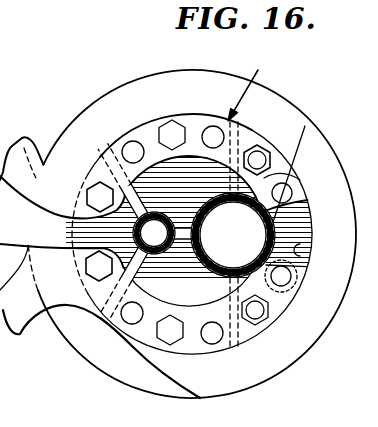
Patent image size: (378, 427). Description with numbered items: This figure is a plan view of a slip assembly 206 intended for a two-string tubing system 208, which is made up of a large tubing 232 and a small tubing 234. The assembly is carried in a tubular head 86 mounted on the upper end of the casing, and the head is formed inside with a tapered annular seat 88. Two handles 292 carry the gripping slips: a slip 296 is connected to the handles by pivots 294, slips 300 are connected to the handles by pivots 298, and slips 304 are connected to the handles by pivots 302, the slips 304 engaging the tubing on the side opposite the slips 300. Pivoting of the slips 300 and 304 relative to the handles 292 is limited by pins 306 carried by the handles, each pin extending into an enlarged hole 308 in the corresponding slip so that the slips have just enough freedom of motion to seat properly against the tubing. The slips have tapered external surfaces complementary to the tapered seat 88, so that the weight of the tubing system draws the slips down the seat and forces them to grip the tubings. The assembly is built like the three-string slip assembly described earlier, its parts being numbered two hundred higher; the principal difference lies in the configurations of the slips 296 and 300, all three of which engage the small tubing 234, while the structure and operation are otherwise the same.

The tubular head 86 is at (296, 365).
The tapered annular seat 88 is at (300, 251).
The slip assembly 206 is at (253, 86).
The two-string tubing system 208 is at (298, 216).
The large tubing 232 is at (266, 170).
The small tubing 234 is at (162, 246).
The handles 292 is at (46, 112).
The pivots 294 is at (98, 192).
The slip 296 is at (108, 240).
The pivots 298 is at (172, 120).
The slips 300 is at (187, 155).
The pivots 302 is at (252, 148).
The slips 304 is at (292, 188).
The pins 306 is at (135, 141).
The enlarged holes 308 is at (318, 300).